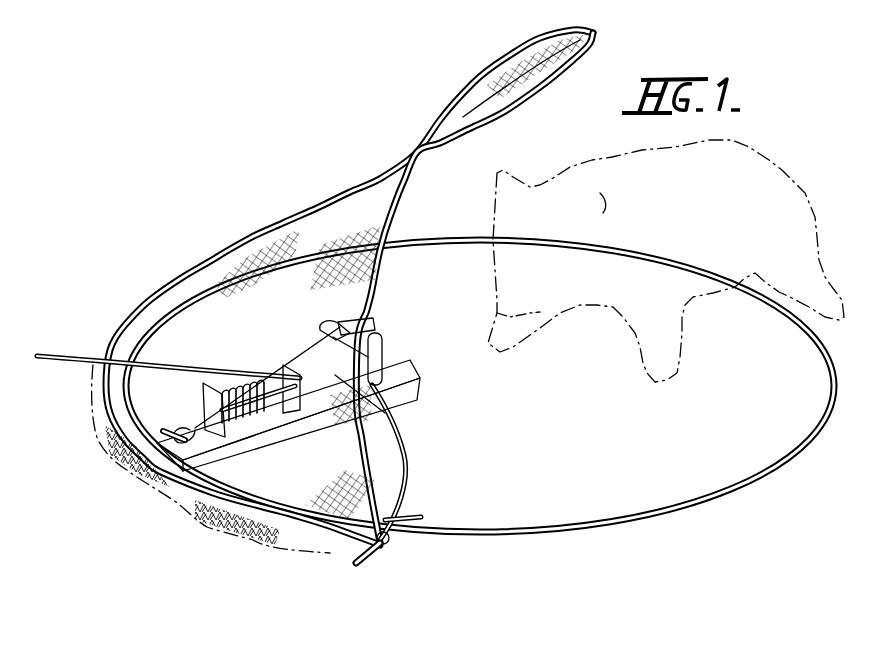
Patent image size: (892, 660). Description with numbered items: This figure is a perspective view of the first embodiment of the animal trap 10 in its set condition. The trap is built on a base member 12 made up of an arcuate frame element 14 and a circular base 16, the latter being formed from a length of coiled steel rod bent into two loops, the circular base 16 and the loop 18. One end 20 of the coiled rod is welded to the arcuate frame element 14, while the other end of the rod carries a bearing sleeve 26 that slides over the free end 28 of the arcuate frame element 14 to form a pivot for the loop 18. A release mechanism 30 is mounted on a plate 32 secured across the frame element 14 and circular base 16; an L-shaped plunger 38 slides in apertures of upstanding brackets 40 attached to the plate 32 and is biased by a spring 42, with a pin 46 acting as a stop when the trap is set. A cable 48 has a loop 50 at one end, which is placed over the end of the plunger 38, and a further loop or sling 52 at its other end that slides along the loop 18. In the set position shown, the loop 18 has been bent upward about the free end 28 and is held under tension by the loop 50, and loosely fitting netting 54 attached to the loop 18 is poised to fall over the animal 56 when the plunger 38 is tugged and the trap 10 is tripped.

The animal trap 10 is at (266, 142).
The base member 12 is at (670, 523).
The arcuate frame element 14 is at (400, 468).
The circular base 16 is at (822, 446).
The loop 18 is at (403, 222).
The one end 20 is at (420, 515).
The bearing sleeve 26 is at (393, 546).
The free end 28 is at (355, 562).
The release mechanism 30 is at (258, 308).
The plate 32 is at (398, 378).
The plunger 38 is at (385, 413).
The upstanding brackets 40 is at (245, 437).
The spring 42 is at (250, 390).
The pin 46 is at (385, 355).
The cable 48 is at (318, 332).
The loop 50 is at (140, 388).
The sling 52 is at (375, 323).
The netting 54 is at (600, 33).
The animal 56 is at (765, 170).